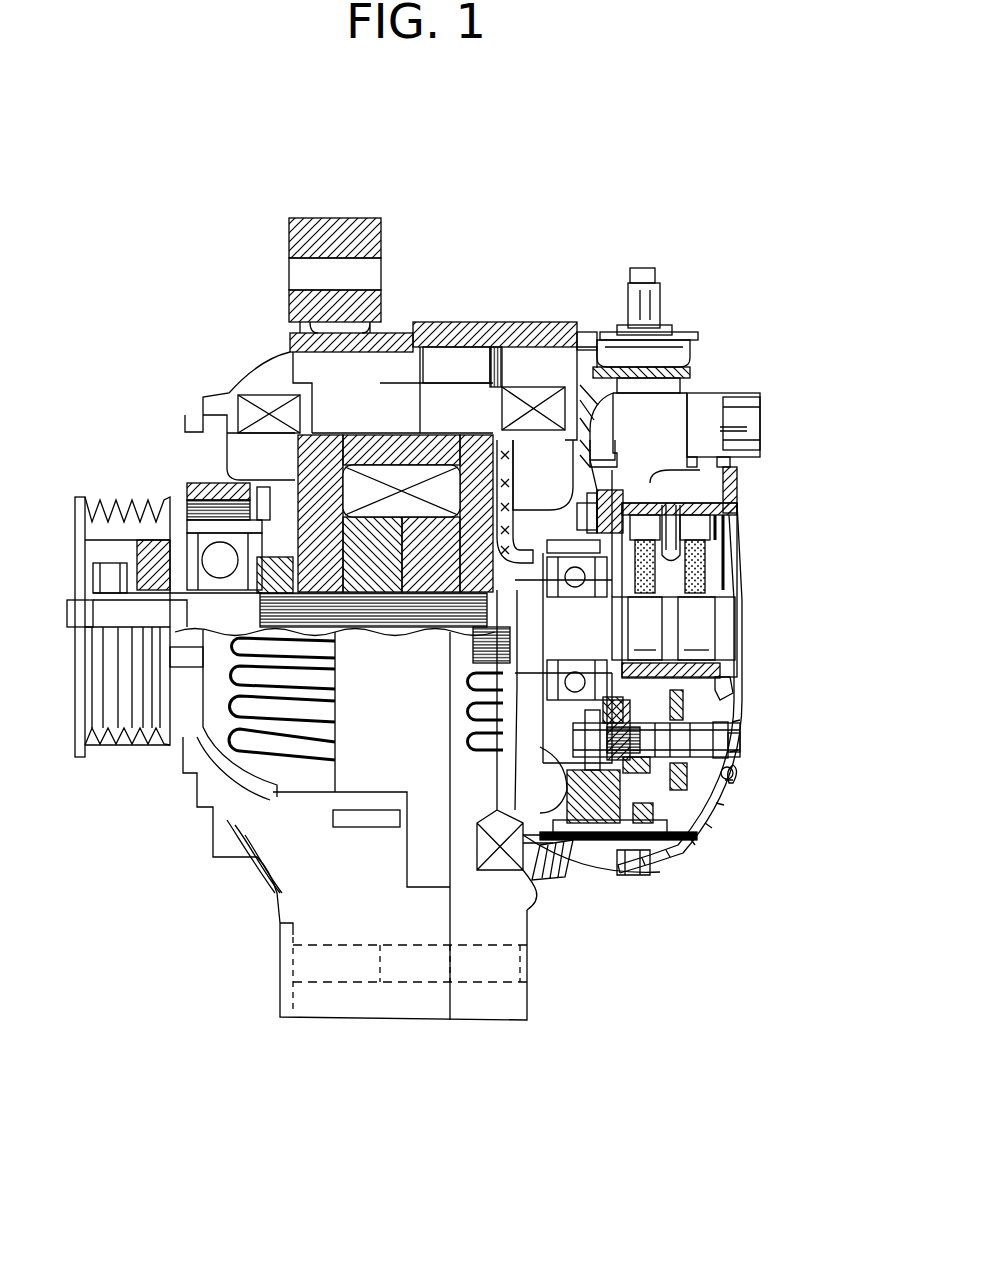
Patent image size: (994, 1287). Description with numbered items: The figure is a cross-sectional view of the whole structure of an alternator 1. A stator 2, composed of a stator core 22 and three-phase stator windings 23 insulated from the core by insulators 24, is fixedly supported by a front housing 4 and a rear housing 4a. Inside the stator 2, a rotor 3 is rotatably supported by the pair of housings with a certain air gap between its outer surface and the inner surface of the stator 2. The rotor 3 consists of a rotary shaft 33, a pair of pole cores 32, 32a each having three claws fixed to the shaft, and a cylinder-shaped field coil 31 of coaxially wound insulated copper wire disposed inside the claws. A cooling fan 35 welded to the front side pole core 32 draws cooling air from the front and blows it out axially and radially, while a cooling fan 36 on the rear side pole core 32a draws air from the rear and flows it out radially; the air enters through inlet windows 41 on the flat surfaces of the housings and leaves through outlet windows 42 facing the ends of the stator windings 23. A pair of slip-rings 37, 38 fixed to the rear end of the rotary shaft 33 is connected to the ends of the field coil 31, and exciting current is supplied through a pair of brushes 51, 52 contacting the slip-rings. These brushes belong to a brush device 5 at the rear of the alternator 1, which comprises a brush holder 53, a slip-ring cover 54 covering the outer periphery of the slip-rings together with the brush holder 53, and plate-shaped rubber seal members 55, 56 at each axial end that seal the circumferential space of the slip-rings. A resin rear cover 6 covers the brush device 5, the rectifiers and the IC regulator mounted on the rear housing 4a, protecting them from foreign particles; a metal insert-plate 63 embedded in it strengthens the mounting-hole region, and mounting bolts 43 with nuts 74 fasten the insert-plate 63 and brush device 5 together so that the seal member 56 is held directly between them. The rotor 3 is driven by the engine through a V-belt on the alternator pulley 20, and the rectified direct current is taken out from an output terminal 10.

The alternator 1 is at (726, 264).
The stator 2 is at (548, 452).
The rotor 3 is at (337, 542).
The front housing 4 is at (406, 961).
The rear housing 4a is at (507, 1010).
The brush device 5 is at (747, 563).
The rear cover 6 is at (743, 691).
The output terminal 10 is at (640, 272).
The alternator pulley 20 is at (78, 505).
The stator core 22 is at (458, 390).
The stator windings 23 is at (673, 373).
The insulators 24 is at (550, 450).
The field coil 31 is at (385, 477).
The front side pole core 32 is at (260, 743).
The rear side pole core 32a is at (437, 547).
The rotary shaft 33 is at (153, 607).
The cooling fan 35 is at (198, 418).
The cooling fan 36 is at (747, 417).
The slip-ring 37 is at (647, 635).
The slip-ring 38 is at (707, 615).
The inlet windows 41 is at (200, 467).
The outlet windows 42 is at (352, 577).
The mounting bolts 43 is at (750, 742).
The brush 51 is at (720, 540).
The brush 52 is at (733, 540).
The brush holder 53 is at (663, 508).
The slip-ring cover 54 is at (733, 693).
The seal member 55 is at (656, 485).
The seal member 56 is at (727, 570).
The insert-plate 63 is at (733, 783).
The nuts 74 is at (733, 770).